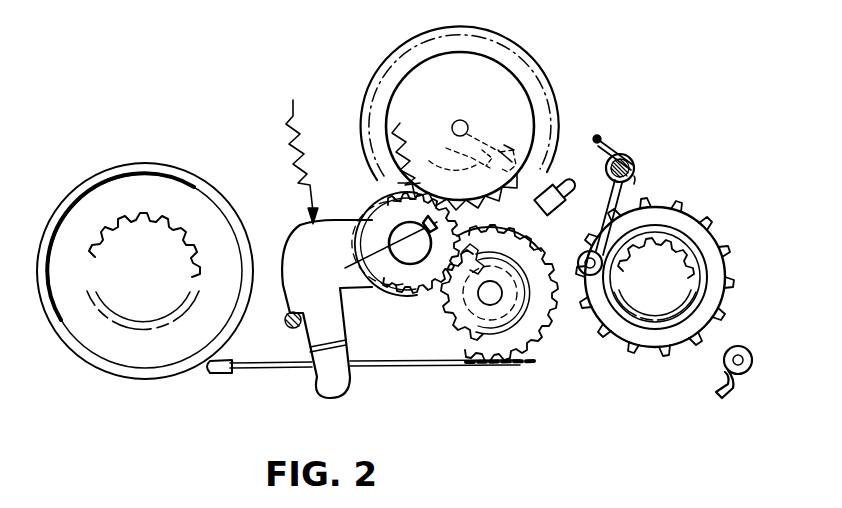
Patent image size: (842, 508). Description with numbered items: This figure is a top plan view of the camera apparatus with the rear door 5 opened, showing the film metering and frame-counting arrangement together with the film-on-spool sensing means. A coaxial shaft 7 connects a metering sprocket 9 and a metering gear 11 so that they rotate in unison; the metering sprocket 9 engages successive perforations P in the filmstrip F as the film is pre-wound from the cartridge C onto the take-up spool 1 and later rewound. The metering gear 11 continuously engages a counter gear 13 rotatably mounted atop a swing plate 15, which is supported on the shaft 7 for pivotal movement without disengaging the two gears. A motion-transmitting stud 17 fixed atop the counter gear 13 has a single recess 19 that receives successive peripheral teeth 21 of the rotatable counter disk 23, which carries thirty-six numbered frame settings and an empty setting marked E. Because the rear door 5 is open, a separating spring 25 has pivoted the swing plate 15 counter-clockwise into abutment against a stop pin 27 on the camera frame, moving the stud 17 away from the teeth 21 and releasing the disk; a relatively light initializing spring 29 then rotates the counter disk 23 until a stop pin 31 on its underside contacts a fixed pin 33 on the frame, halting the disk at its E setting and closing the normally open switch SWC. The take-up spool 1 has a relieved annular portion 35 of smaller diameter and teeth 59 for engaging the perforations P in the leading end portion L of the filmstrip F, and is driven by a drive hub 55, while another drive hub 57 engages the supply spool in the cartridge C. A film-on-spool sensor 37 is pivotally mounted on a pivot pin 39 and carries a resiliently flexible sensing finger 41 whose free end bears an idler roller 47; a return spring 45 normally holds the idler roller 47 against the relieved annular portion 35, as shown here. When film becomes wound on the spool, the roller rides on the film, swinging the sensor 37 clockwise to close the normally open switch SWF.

The take-up spool 1 is at (714, 300).
The rear door 5 is at (730, 380).
The coaxial shaft 7 is at (497, 295).
The metering sprocket 9 is at (450, 326).
The metering gear 11 is at (470, 284).
The counter gear 13 is at (425, 271).
The swing plate 15 is at (300, 235).
The motion-transmitting stud 17 is at (388, 255).
The recess 19 is at (400, 226).
The peripheral teeth 21 is at (378, 214).
The counter disk 23 is at (414, 82).
The separating spring 25 is at (290, 140).
The stop pin 27 is at (292, 330).
The initializing spring 29 is at (403, 96).
The stop pin 31 is at (466, 122).
The fixed pin 33 is at (470, 146).
The relieved annular portion 35 is at (710, 278).
The film-on-spool sensor 37 is at (637, 174).
The pivot pin 39 is at (630, 160).
The sensing finger 41 is at (622, 194).
The return spring 45 is at (616, 158).
The idler roller 47 is at (604, 272).
The drive hub 55 is at (672, 252).
The drive hub 57 is at (172, 232).
The teeth 59 is at (722, 248).
The cartridge C is at (148, 195).
The filmstrip F is at (272, 372).
The leading end portion L is at (535, 366).
The perforations P is at (496, 366).
The normally open switch SWC is at (460, 161).
The normally open switch SWF is at (560, 194).